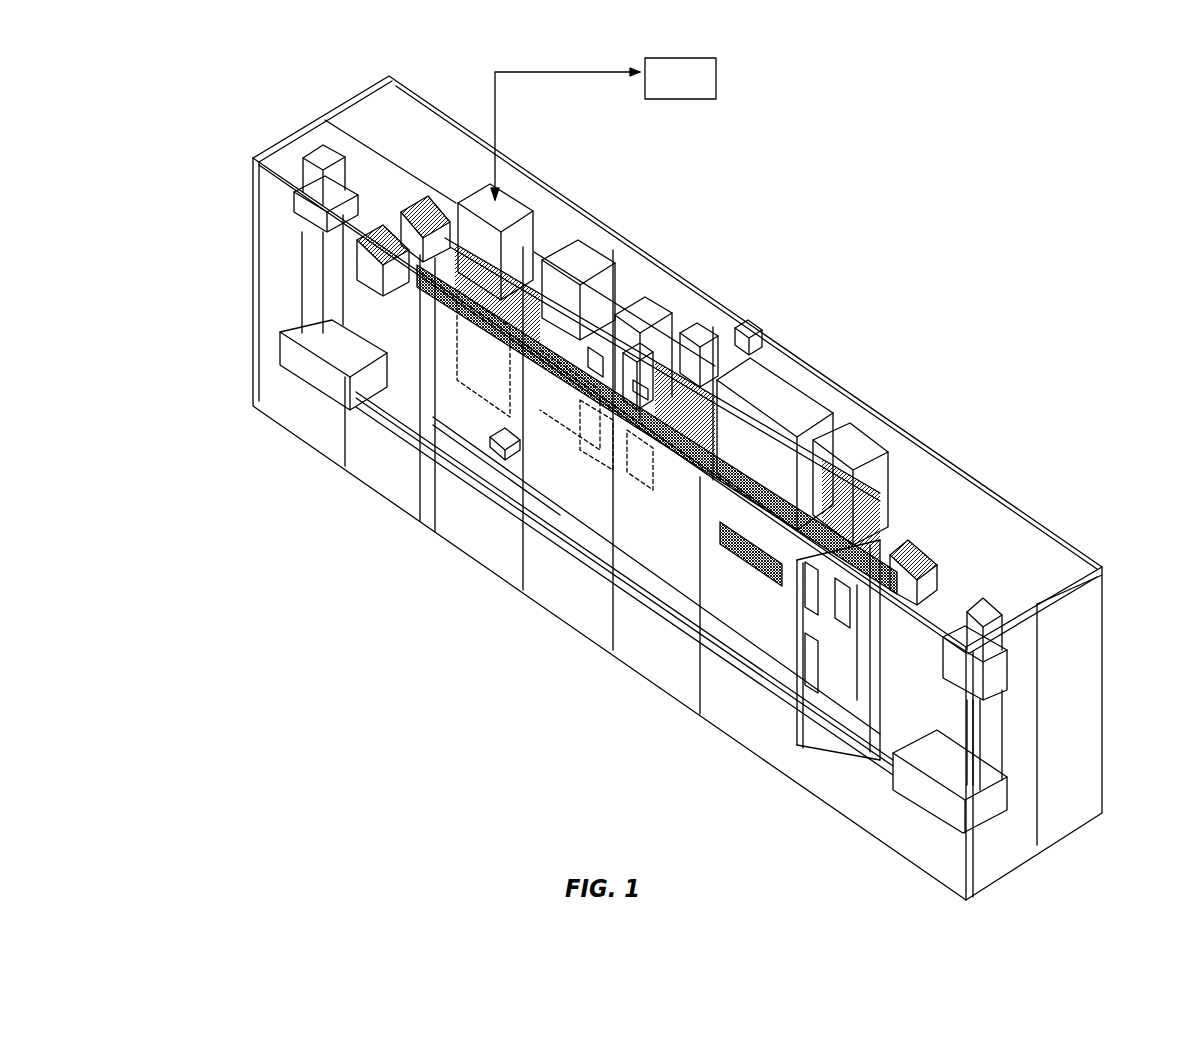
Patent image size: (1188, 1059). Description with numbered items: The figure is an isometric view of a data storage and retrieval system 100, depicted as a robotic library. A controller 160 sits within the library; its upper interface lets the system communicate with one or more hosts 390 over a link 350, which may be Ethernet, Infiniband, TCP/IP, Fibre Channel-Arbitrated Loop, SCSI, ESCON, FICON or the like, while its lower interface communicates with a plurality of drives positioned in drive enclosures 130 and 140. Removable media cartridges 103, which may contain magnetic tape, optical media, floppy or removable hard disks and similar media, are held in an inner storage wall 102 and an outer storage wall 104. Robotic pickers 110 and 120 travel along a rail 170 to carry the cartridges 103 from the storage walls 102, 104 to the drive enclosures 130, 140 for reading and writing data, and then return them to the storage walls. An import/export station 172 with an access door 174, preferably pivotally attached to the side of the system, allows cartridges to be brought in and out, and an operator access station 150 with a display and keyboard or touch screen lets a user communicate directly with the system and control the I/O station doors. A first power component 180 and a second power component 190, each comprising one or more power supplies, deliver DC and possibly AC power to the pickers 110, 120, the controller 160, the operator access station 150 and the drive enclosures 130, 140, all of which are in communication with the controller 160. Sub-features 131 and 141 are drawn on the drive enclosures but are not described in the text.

The data storage and retrieval system 100 is at (897, 124).
The inner storage wall 102 is at (512, 258).
The removable media cartridge 103 is at (485, 450).
The outer storage wall 104 is at (470, 433).
The robotic picker 110 is at (301, 222).
The robotic picker 120 is at (993, 673).
The drive enclosure 130 is at (685, 330).
The sensor window 131 is at (647, 293).
The drive enclosure 140 is at (693, 320).
The module connector 141 is at (748, 335).
The operator access station 150 is at (583, 260).
The controller 160 is at (511, 208).
The rail 170 is at (565, 545).
The import/export station 172 is at (845, 698).
The access door 174 is at (808, 668).
The first power component 180 is at (915, 548).
The second power component 190 is at (975, 592).
The link 350 is at (512, 72).
The host 390 is at (680, 58).